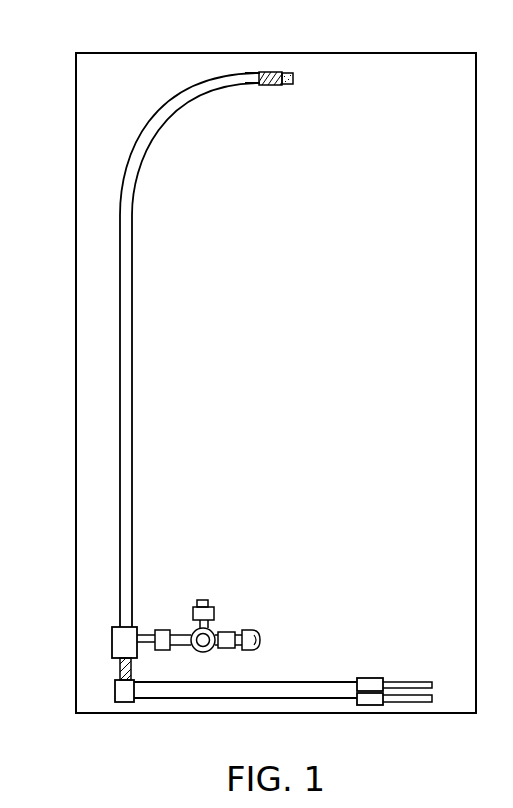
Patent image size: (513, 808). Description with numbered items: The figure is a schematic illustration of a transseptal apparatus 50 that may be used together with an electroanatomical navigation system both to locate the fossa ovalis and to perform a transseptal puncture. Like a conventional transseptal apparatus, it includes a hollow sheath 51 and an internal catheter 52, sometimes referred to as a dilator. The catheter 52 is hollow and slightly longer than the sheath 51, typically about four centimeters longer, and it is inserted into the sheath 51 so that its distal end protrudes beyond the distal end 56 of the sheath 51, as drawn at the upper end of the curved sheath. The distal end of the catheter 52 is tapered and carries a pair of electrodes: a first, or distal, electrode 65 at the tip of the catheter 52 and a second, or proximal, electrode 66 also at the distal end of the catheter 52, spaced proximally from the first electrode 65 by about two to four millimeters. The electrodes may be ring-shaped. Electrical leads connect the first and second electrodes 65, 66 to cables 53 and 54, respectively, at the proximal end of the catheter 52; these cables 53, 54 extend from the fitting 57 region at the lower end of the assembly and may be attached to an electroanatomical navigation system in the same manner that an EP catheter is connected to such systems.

The transseptal apparatus 50 is at (207, 368).
The hollow sheath 51 is at (133, 205).
The catheter 52 is at (118, 672).
The cable 53 is at (408, 680).
The cable 54 is at (408, 703).
The distal end of sheath 56 is at (265, 85).
The valve block 57 is at (112, 645).
The first electrode 65 is at (290, 72).
The second electrode 66 is at (265, 72).